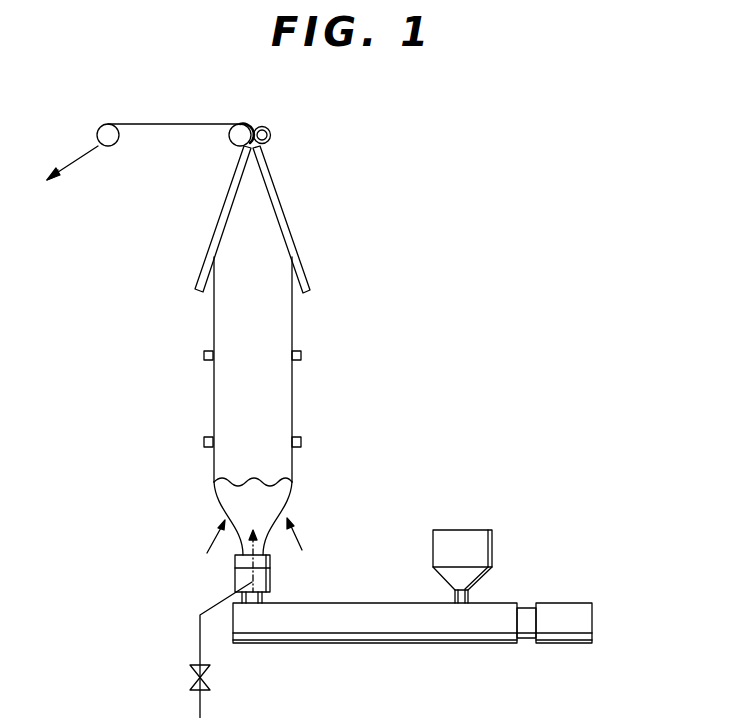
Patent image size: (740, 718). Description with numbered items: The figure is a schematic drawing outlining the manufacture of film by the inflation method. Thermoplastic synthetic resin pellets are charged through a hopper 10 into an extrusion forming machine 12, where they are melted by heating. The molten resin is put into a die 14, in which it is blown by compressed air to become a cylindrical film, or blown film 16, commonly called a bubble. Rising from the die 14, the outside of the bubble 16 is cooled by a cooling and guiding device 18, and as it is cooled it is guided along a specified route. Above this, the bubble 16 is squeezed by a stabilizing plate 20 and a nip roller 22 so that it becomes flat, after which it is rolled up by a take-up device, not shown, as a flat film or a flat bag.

The hopper 10 is at (477, 545).
The extrusion forming machine 12 is at (413, 628).
The die 14 is at (270, 570).
The blown film 16 is at (292, 393).
The cooling and guiding device 18 is at (295, 350).
The stabilizing plate 20 is at (287, 217).
The nip roller 22 is at (270, 130).